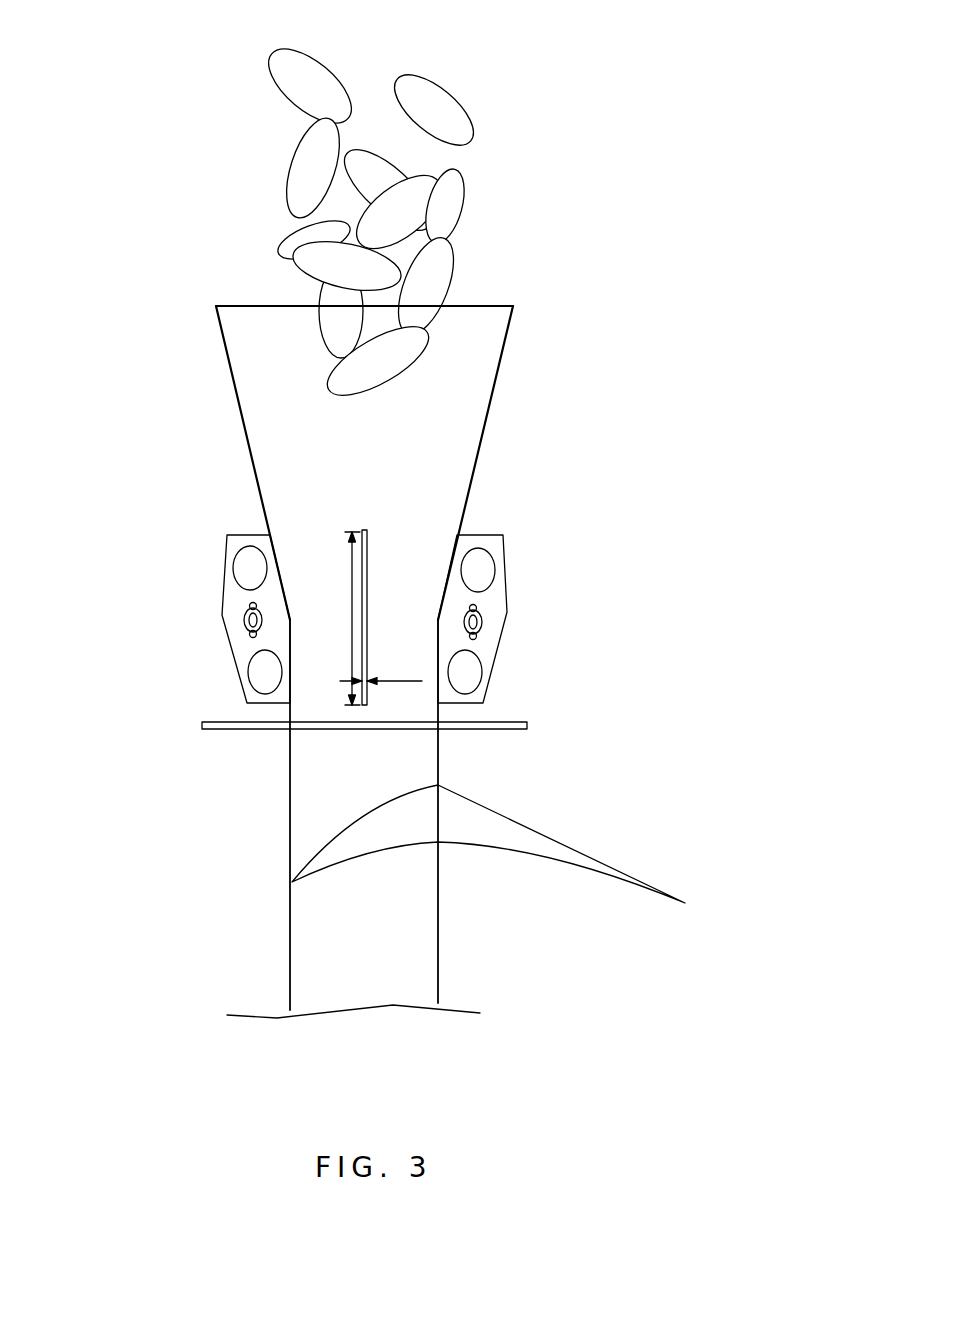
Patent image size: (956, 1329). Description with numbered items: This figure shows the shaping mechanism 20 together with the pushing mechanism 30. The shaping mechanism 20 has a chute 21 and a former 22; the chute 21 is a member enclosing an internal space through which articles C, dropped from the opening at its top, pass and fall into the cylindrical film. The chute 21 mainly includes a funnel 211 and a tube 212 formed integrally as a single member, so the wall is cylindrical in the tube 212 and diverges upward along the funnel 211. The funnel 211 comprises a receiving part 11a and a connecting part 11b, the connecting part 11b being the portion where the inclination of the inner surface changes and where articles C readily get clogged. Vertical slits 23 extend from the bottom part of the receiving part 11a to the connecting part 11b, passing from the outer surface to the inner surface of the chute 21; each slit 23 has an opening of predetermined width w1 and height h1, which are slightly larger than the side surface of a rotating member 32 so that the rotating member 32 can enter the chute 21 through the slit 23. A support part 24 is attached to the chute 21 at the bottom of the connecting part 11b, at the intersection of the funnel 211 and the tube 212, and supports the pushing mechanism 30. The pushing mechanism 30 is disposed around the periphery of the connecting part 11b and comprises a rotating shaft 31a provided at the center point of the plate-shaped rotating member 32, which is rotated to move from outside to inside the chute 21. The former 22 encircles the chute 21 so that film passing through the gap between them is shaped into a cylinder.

The articles C is at (260, 35).
The shaping mechanism 20 is at (153, 862).
The chute 21 is at (102, 458).
The funnel 211 is at (210, 453).
The tube 212 is at (293, 805).
The receiving part 11a is at (238, 402).
The connecting part 11b is at (325, 668).
The pushing mechanism 30 is at (536, 471).
The rotating member 32 is at (233, 533).
The rotating shaft 31a is at (246, 620).
The slit 23 is at (365, 528).
The support part 24 is at (495, 729).
The former 22 is at (550, 860).
The height of slit opening h1 is at (337, 618).
The width of slit opening w1 is at (381, 667).